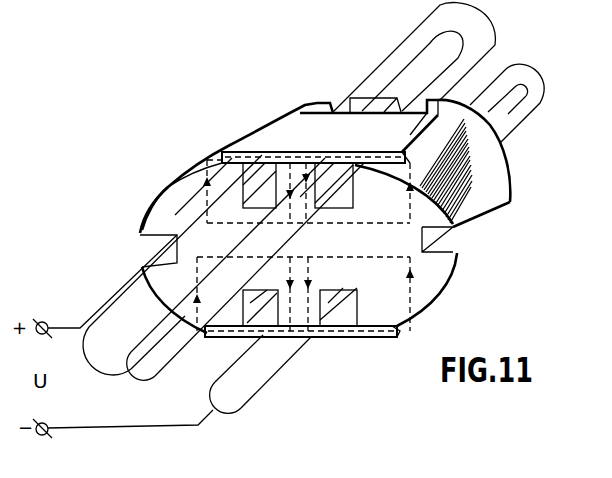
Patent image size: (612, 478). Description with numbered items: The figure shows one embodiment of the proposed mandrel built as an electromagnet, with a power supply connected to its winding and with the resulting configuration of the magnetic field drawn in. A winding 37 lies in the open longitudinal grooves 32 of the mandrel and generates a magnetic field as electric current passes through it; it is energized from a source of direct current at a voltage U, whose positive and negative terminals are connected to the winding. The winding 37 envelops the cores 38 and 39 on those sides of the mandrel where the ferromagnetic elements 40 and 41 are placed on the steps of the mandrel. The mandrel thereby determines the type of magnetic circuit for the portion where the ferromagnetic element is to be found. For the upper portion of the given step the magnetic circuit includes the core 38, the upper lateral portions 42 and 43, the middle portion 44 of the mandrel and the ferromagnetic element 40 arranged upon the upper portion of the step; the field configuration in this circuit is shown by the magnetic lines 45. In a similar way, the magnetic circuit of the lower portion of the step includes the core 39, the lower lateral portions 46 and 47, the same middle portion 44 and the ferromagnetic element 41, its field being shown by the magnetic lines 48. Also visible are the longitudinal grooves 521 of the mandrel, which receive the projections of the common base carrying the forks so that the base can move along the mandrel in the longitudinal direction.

The open longitudinal grooves 32 is at (257, 183).
The winding 37 is at (106, 355).
The core 38 is at (283, 166).
The core 39 is at (322, 337).
The ferromagnetic element 40 is at (317, 123).
The ferromagnetic element 41 is at (366, 338).
The upper lateral portion 42 is at (243, 140).
The upper lateral portion 43 is at (510, 150).
The middle portion 44 is at (385, 245).
The magnetic lines 45 is at (207, 207).
The lower lateral portion 46 is at (165, 296).
The lower lateral portion 47 is at (430, 288).
The magnetic lines 48 is at (394, 332).
The longitudinal grooves 521 is at (525, 176).